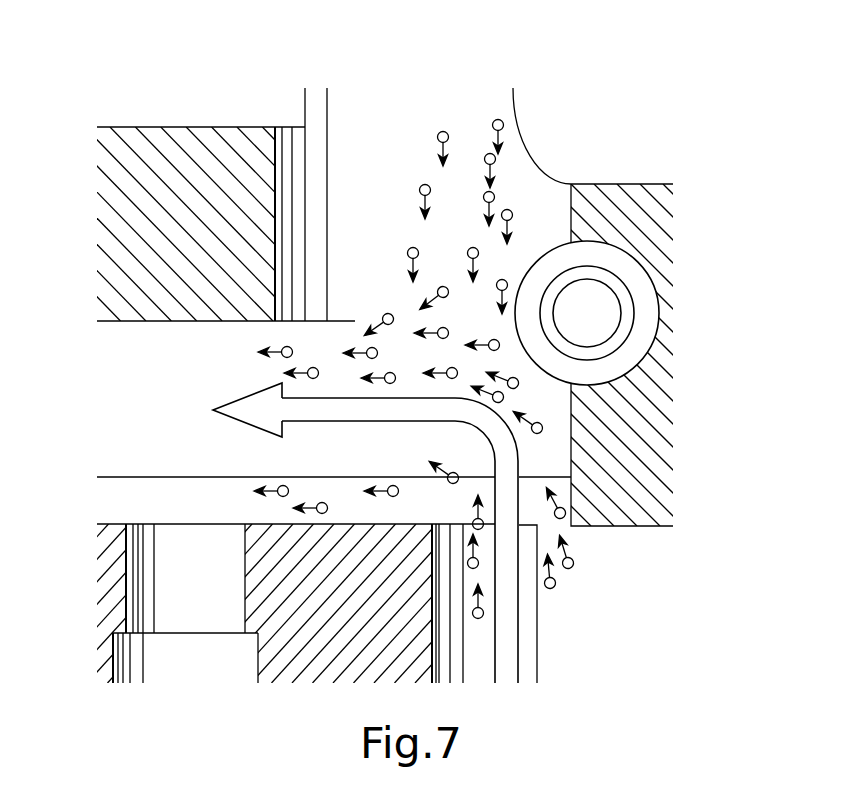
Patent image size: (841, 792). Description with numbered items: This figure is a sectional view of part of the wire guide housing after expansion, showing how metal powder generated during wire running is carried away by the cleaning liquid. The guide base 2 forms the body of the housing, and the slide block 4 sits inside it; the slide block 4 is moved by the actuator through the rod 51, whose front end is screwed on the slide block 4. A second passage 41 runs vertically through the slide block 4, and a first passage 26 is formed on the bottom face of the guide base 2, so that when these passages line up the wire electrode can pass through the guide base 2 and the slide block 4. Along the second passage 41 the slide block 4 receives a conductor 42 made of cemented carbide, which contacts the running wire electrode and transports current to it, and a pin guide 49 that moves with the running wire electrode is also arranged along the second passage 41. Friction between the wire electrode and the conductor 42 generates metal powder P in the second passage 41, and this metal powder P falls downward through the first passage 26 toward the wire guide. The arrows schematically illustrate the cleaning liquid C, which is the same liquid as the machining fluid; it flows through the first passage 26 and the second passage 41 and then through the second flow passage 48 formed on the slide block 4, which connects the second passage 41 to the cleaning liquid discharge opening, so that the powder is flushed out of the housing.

The guide base 2 is at (349, 635).
The slide block 4 is at (157, 279).
The first passage 26 is at (590, 635).
The second passage 41 is at (370, 166).
The conductor 42 is at (590, 144).
The second flow passage 48 is at (331, 334).
The pin guide 49 is at (650, 305).
The rod 51 is at (275, 95).
The metal powder P is at (441, 131).
The cleaning liquid C is at (240, 406).